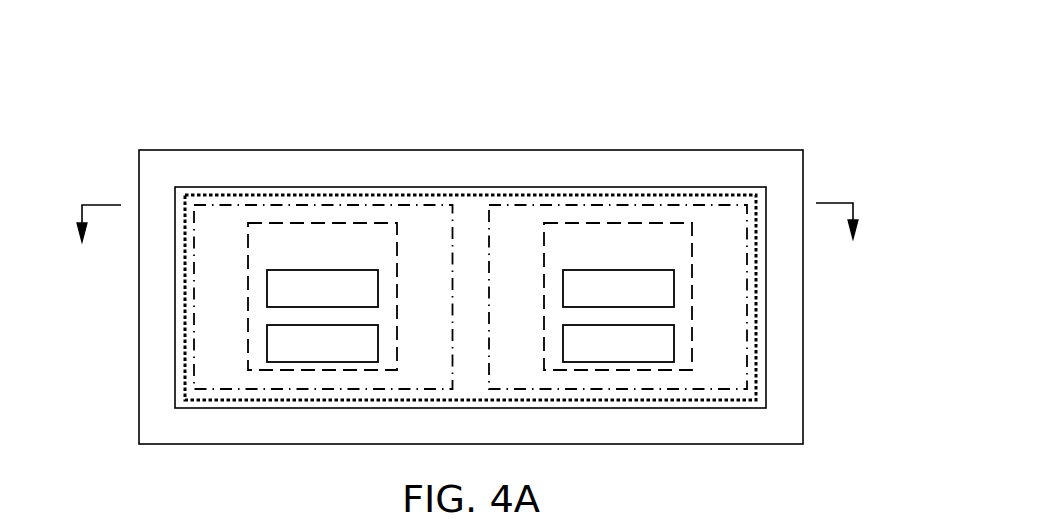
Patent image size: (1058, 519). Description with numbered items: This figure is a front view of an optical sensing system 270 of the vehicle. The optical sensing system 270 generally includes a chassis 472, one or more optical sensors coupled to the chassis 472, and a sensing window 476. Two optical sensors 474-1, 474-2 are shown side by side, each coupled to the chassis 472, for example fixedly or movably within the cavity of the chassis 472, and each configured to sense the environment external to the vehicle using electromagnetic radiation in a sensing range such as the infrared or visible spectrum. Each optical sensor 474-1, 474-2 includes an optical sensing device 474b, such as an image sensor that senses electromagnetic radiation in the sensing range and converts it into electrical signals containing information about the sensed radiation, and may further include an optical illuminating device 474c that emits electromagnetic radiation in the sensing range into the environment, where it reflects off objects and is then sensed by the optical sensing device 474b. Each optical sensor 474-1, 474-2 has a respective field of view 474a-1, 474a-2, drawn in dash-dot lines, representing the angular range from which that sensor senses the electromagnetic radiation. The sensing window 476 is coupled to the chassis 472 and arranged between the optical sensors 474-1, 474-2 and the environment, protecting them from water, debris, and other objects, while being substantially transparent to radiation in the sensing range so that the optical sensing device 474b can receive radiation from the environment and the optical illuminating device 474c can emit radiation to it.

The optical sensing system 270 is at (487, 246).
The chassis 472 is at (803, 408).
The sensing window 476 is at (765, 295).
The field of view 474a-1 is at (195, 354).
The field of view 474a-2 is at (748, 356).
The optical sensor 474-1 is at (294, 265).
The optical sensor 474-2 is at (589, 265).
The optical sensing device 474b is at (348, 300).
The optical illuminating device 474c is at (348, 355).